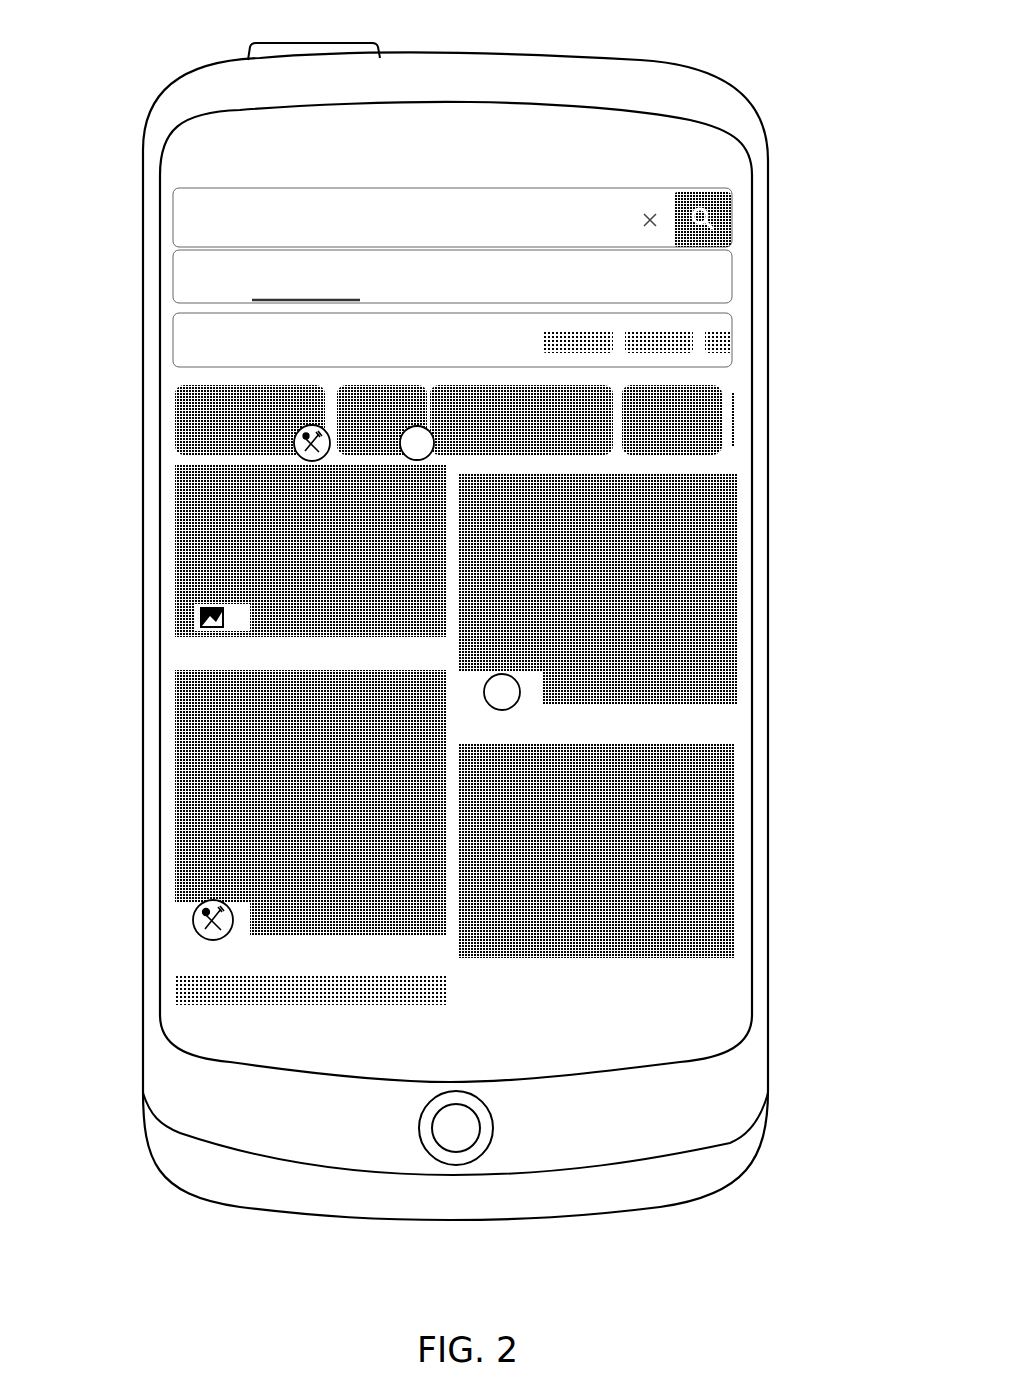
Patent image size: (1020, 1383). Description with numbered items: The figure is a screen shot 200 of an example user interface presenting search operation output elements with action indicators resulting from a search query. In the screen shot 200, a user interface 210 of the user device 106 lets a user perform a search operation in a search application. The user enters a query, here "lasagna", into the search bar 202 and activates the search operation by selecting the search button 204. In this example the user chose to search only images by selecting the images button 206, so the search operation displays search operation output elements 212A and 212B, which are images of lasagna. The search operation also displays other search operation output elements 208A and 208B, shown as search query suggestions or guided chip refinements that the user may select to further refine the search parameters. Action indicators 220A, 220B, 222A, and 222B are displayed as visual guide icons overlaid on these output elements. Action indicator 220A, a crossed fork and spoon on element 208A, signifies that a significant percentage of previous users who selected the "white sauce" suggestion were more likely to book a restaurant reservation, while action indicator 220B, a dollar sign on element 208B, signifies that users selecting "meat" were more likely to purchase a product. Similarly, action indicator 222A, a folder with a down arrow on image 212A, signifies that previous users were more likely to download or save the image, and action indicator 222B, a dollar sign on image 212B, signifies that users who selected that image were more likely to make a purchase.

The user device 106 is at (673, 63).
The screen shot 200 is at (473, 541).
The user interface 210 is at (452, 158).
The search bar 202 is at (180, 225).
The search button 204 is at (722, 218).
The images button 206 is at (268, 288).
The search operation output element 208A is at (197, 400).
The search operation output element 208B is at (407, 405).
The action indicator 220A is at (293, 455).
The action indicator 220B is at (437, 457).
The search operation output element 212A is at (211, 552).
The search operation output element 212B is at (675, 575).
The action indicator 222A is at (190, 620).
The action indicator 222B is at (542, 695).